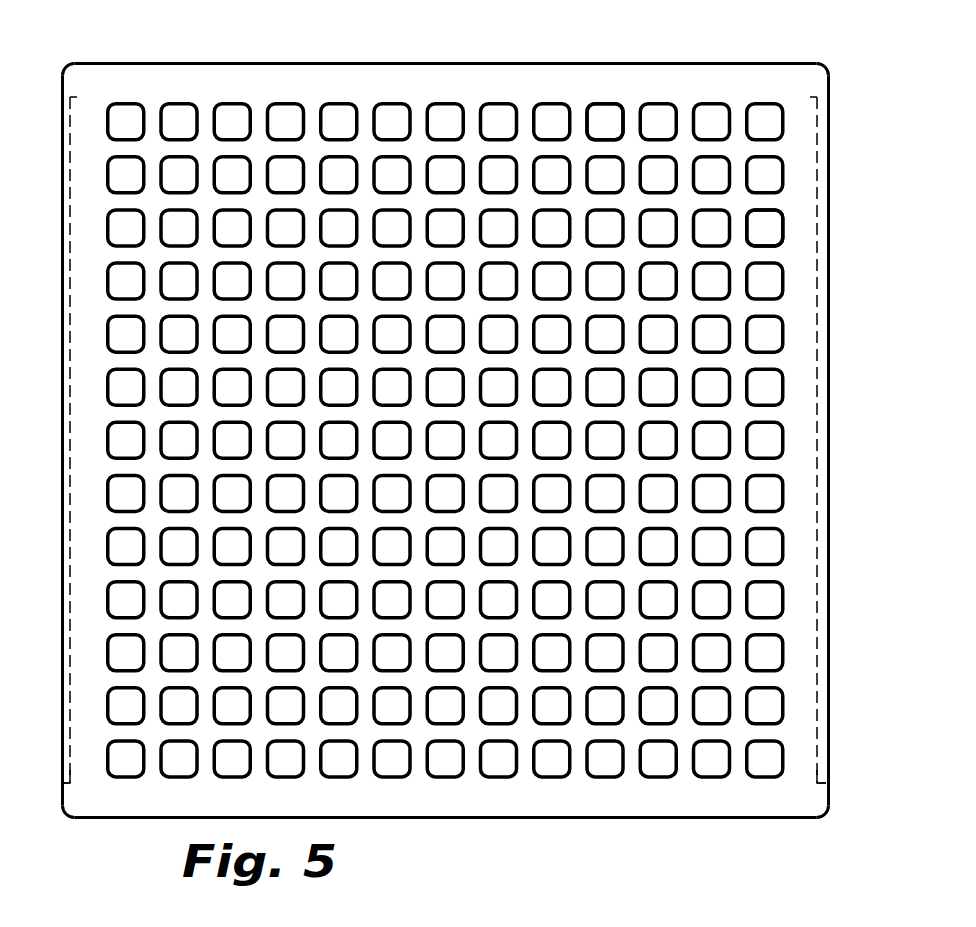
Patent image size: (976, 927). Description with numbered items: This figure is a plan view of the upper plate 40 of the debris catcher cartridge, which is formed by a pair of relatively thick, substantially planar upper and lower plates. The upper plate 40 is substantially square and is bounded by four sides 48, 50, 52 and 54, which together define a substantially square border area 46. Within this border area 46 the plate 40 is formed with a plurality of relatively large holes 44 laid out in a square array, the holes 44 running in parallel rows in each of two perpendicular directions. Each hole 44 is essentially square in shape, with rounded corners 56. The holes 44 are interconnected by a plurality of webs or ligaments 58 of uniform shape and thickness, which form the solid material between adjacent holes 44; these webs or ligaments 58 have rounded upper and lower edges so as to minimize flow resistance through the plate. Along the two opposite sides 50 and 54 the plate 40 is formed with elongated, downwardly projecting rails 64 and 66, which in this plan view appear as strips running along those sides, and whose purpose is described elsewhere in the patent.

The upper plate 40 is at (811, 8).
The holes 44 is at (552, 112).
The border area 46 is at (92, 346).
The side 48 is at (315, 62).
The side 50 is at (62, 240).
The side 52 is at (498, 818).
The side 54 is at (826, 418).
The rounded corners 56 is at (582, 148).
The webs or ligaments 58 is at (770, 255).
The rail 64 is at (72, 762).
The rail 66 is at (810, 760).